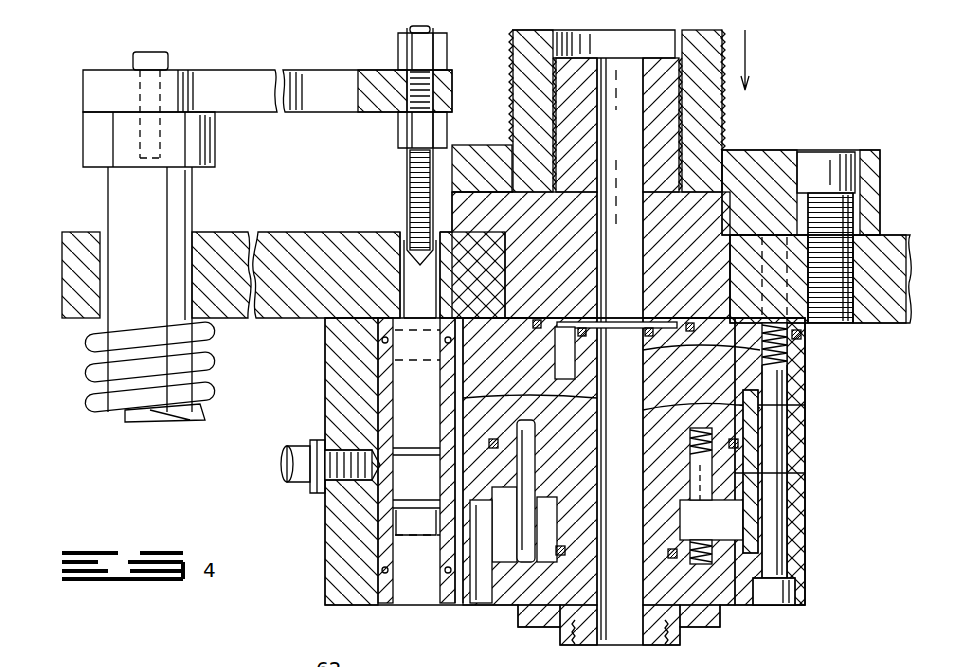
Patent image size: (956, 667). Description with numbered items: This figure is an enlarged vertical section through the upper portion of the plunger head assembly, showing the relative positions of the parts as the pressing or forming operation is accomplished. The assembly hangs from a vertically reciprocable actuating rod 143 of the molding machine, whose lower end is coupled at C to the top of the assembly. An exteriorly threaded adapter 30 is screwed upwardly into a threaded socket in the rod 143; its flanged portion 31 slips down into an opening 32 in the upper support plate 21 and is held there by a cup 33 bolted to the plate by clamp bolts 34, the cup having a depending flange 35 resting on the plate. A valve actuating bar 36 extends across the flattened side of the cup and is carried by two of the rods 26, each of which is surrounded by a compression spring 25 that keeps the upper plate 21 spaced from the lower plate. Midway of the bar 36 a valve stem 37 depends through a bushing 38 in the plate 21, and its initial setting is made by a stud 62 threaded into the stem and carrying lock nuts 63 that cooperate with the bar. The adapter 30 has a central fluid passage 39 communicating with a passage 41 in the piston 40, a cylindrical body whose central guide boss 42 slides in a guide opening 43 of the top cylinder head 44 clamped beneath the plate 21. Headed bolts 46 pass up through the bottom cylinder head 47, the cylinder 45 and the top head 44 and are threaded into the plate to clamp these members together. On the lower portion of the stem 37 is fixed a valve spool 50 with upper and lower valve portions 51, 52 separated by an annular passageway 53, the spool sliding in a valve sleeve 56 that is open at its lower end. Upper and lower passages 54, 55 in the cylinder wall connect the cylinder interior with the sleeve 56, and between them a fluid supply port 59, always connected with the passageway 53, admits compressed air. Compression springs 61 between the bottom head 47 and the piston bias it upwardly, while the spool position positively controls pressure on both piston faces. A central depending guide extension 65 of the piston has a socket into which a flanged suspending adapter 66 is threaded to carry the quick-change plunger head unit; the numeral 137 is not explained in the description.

The upper support plate 21 is at (300, 240).
The compression spring 25 is at (90, 370).
The rod 26 is at (125, 418).
The adapter 30 is at (550, 78).
The flanged portion 31 is at (408, 225).
The opening 32 is at (522, 260).
The cup 33 is at (757, 157).
The clamp bolt 34 is at (826, 162).
The depending flange 35 is at (872, 216).
The valve actuating bar 36 is at (256, 88).
The valve stem 37 is at (405, 165).
The bushing 38 is at (400, 248).
The central fluid passage 39 is at (628, 80).
The piston 40 is at (745, 473).
The passage 41 is at (770, 408).
The central guide boss 42 is at (780, 396).
The guide opening 43 is at (800, 338).
The top cylinder head 44 is at (798, 368).
The cylinder 45 is at (797, 435).
The headed bolt 46 is at (775, 522).
The bottom cylinder head 47 is at (797, 567).
The valve spool 50 is at (393, 425).
The upper valve portion 51 is at (378, 345).
The lower valve portion 52 is at (390, 503).
The annular passageway 53 is at (380, 450).
The upper passage 54 is at (592, 396).
The lower passage 55 is at (472, 603).
The valve sleeve 56 is at (383, 378).
The fluid supply port 59 is at (292, 456).
The compression spring 61 is at (690, 437).
The stud 62 is at (410, 31).
The lock nut 63 is at (400, 50).
The central depending guide extension 65 is at (555, 610).
The flanged suspending adapter 66 is at (665, 637).
The actuating rod 143 is at (712, 100).
The coupling C is at (506, 91).
The lower member 137 is at (447, 662).